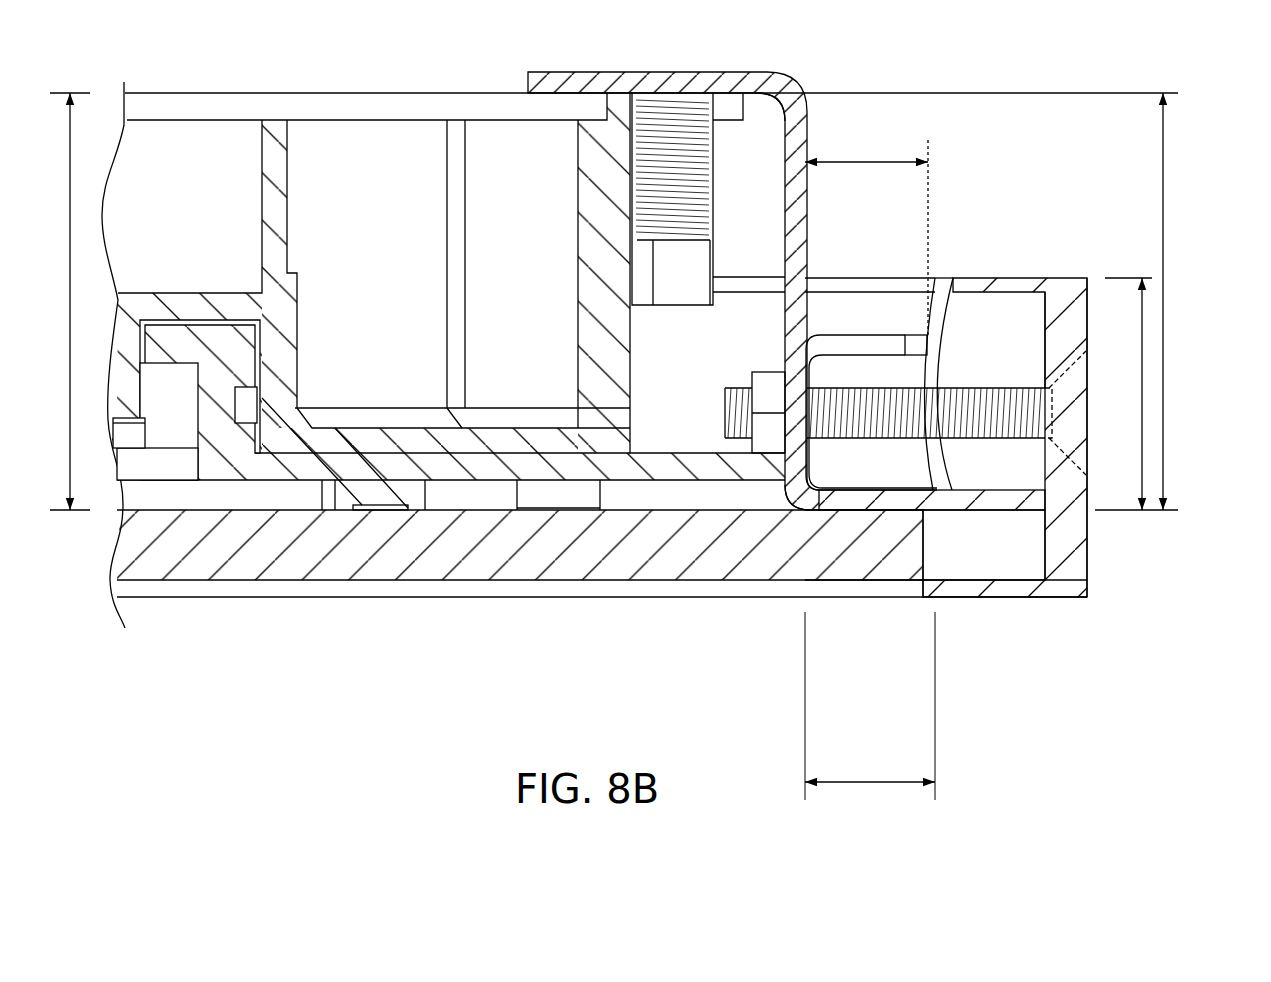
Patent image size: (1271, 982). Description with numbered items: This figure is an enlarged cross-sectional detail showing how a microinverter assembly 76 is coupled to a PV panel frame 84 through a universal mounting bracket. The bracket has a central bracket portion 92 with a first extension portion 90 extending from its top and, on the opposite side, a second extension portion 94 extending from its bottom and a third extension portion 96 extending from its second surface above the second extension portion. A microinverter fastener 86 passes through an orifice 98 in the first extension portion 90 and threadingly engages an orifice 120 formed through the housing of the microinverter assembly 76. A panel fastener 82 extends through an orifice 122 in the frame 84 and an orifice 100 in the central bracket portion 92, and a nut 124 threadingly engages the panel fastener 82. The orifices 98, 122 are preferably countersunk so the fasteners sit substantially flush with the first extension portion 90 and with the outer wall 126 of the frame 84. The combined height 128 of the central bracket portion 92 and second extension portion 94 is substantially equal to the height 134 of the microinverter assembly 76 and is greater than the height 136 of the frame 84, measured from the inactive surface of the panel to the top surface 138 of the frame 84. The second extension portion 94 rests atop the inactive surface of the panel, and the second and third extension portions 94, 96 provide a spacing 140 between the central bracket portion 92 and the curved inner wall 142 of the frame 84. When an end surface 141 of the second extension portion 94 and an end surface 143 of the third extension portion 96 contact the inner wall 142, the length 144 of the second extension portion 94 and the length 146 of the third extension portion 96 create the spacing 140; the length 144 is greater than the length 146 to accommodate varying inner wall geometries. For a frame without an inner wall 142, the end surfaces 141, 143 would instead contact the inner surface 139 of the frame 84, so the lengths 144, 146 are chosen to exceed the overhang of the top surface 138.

The microinverter assembly 76 is at (357, 77).
The panel fastener 82 is at (889, 425).
The frame 84 is at (1087, 570).
The microinverter fastener 86 is at (692, 168).
The first extension portion 90 is at (562, 72).
The central bracket portion 92 is at (808, 225).
The second extension portion 94 is at (840, 516).
The third extension portion 96 is at (838, 342).
The orifice 98 is at (684, 268).
The orifice 100 is at (795, 472).
The orifice 120 is at (732, 133).
The orifice 122 is at (1095, 368).
The nut 124 is at (770, 380).
The outer wall 126 is at (1087, 540).
The combined height 128 is at (1138, 301).
The height 134 is at (68, 301).
The height 136 is at (1152, 395).
The top surface 138 is at (1040, 278).
The inner surface 139 is at (1043, 330).
The spacing 140 is at (871, 305).
The end surface 141 is at (937, 500).
The inner wall 142 is at (928, 295).
The end surface 143 is at (915, 345).
The length 144 is at (858, 783).
The length 146 is at (864, 160).